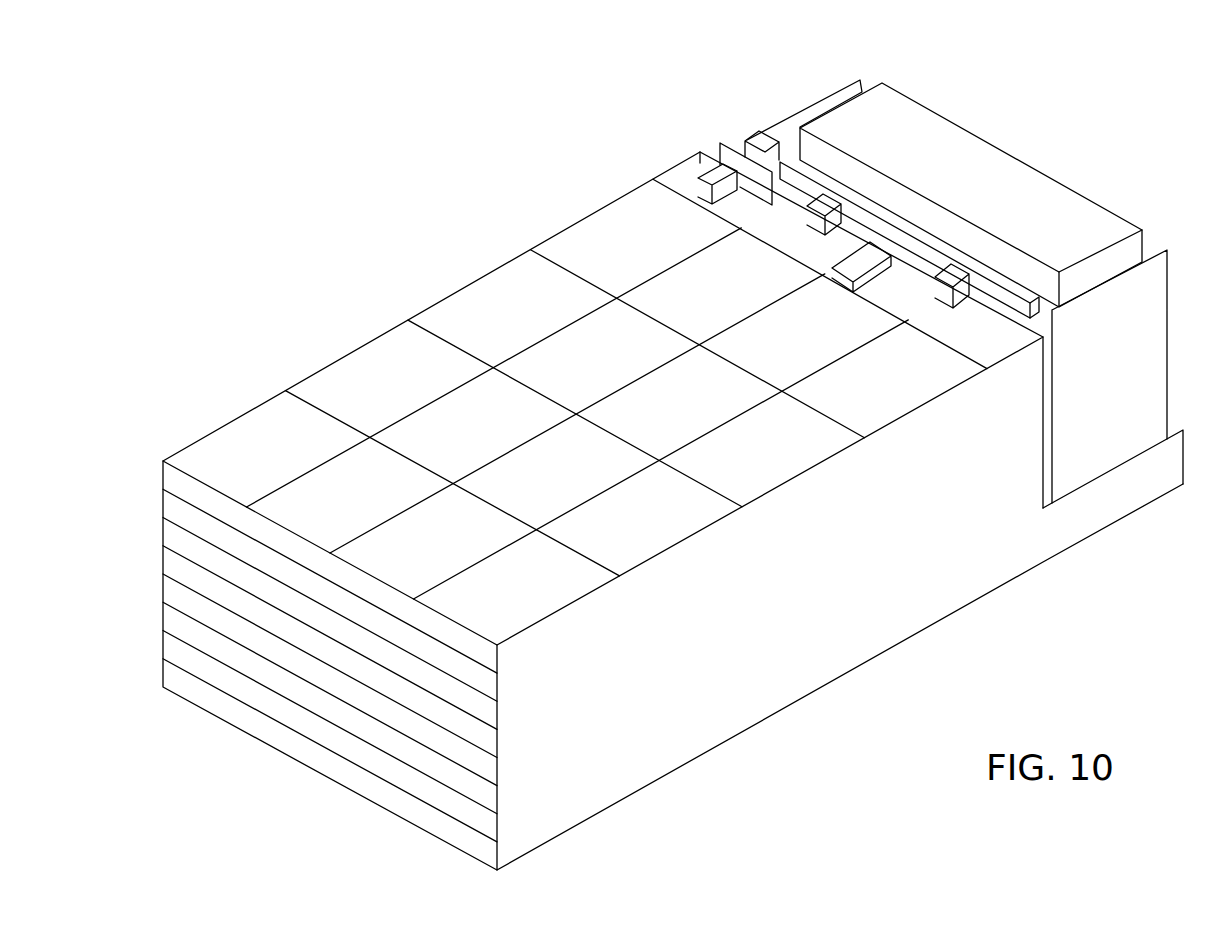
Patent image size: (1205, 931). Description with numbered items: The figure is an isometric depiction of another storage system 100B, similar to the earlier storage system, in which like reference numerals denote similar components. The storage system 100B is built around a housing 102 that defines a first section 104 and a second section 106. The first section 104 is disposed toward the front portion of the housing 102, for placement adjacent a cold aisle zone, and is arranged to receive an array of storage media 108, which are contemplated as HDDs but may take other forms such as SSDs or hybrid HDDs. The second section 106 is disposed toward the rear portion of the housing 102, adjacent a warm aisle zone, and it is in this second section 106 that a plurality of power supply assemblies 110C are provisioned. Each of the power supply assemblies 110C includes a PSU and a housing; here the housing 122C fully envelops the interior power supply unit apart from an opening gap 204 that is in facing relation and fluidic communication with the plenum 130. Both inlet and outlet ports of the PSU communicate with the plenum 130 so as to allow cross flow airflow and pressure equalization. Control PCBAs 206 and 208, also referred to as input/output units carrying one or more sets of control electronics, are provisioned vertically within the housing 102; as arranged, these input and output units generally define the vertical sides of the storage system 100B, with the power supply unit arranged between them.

The storage system 100B is at (408, 184).
The housing 102 is at (820, 637).
The first section 104 is at (272, 779).
The second section 106 is at (971, 169).
The storage media 108 is at (353, 363).
The power supply assemblies 110C is at (976, 140).
The housing of the power supply assembly 122C is at (905, 128).
The plenum 130 is at (838, 225).
The opening gap 204 is at (1002, 305).
The control PCBA 206 is at (1152, 308).
The control PCBA 208 is at (772, 128).